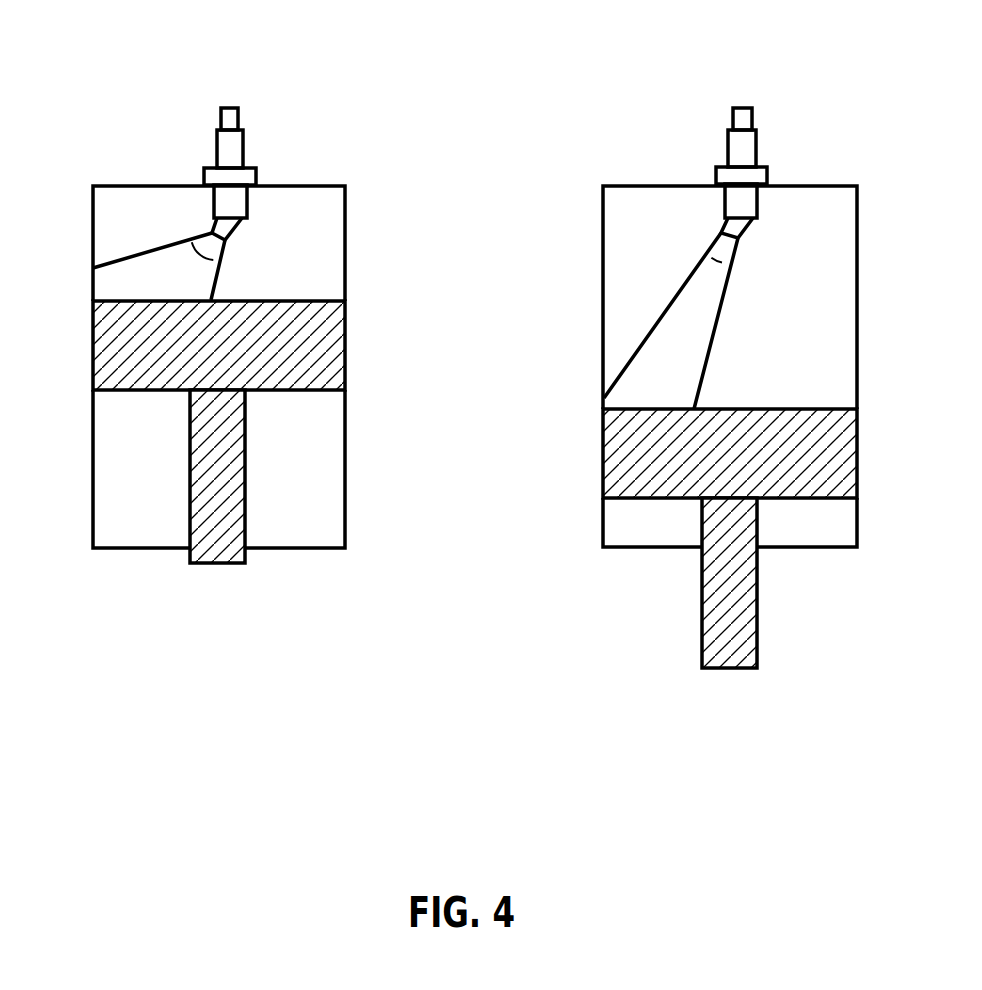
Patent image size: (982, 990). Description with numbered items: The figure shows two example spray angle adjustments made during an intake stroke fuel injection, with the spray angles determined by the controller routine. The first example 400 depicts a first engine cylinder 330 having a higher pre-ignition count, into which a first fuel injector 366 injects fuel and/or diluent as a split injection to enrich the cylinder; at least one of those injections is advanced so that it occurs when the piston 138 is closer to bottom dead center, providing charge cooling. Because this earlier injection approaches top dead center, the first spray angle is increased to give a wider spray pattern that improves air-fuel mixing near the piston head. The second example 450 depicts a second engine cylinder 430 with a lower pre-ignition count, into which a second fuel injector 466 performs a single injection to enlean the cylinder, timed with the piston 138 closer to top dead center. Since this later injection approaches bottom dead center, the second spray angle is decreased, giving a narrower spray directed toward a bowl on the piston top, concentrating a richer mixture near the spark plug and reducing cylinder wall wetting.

The first example 400 is at (206, 278).
The second example 450 is at (726, 278).
The first fuel injector 366 is at (247, 136).
The second fuel injector 466 is at (757, 137).
The second engine cylinder 430 is at (309, 186).
The first engine cylinder 330 is at (837, 186).
The piston 138 is at (247, 303).